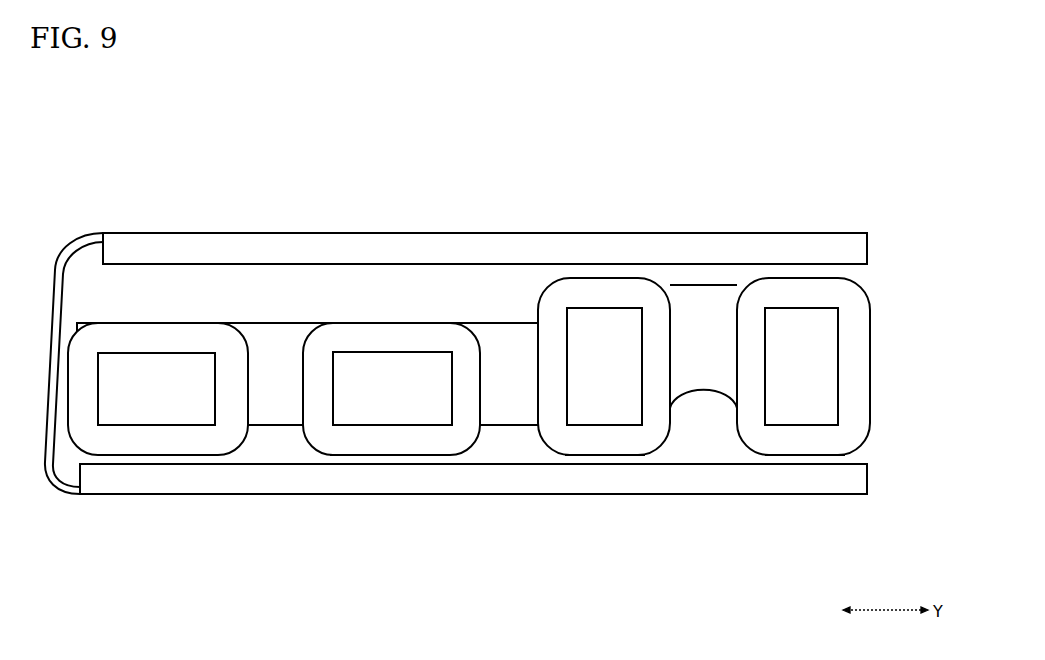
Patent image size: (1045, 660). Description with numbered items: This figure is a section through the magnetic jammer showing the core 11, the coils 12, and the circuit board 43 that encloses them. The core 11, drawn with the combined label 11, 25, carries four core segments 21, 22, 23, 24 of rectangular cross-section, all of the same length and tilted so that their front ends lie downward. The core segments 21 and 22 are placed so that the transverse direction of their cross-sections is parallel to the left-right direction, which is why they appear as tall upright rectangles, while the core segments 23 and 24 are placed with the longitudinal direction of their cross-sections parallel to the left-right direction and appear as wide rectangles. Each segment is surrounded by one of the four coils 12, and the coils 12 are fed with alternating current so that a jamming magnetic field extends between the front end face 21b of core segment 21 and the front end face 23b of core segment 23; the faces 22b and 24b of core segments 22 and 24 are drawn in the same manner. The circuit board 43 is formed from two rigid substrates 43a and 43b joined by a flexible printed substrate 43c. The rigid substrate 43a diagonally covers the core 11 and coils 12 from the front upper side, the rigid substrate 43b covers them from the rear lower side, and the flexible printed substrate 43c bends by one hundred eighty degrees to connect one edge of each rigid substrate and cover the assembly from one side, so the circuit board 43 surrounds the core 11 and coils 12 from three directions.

The core 11 is at (407, 348).
The yoke portion 25 is at (275, 322).
The coils 12 is at (150, 455).
The core segment 21 is at (826, 366).
The front end face 21b is at (822, 380).
The core segment 22 is at (628, 366).
The second tooth tip portion 22b is at (623, 380).
The core segment 23 is at (391, 366).
The front end face 23b is at (413, 400).
The core segment 24 is at (158, 366).
The fourth tooth tip portion 24b is at (177, 400).
The circuit board 43 is at (485, 223).
The rigid substrate 43a is at (493, 233).
The rigid substrate 43b is at (502, 495).
The flexible printed substrate 43c is at (78, 234).